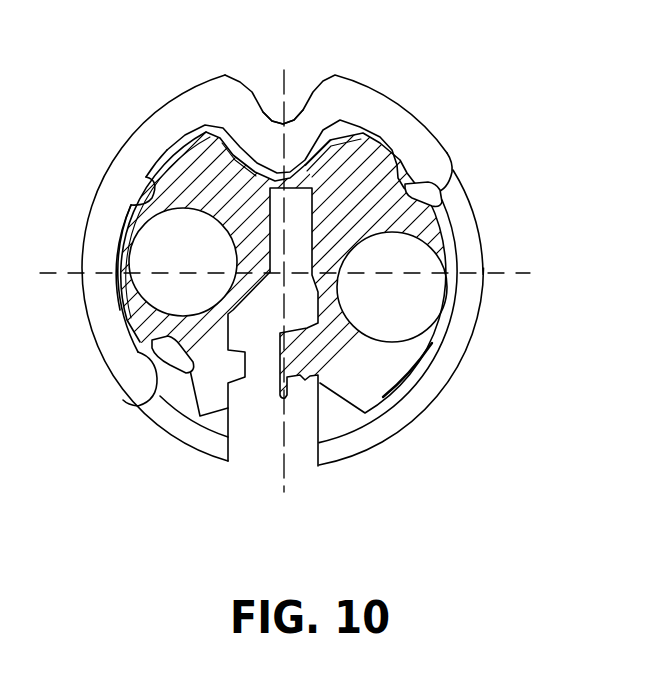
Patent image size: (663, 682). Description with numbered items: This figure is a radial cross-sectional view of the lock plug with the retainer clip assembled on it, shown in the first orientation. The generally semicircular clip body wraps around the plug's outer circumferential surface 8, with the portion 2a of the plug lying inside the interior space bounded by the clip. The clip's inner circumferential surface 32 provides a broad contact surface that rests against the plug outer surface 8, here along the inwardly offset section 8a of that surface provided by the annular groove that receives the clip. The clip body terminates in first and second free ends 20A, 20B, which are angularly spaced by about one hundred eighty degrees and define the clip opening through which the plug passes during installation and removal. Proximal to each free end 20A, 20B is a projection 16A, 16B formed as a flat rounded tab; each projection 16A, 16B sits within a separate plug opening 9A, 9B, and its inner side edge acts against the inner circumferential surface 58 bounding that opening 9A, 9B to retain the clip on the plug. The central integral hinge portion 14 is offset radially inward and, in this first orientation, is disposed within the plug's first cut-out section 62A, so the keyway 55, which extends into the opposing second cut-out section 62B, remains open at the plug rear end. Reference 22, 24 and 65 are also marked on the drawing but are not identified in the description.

The portion of the plug 2a is at (188, 177).
The outer circumferential surface 8 is at (481, 306).
The inwardly offset section 8a is at (183, 142).
The plug opening 9A is at (183, 377).
The plug opening 9B is at (433, 190).
The hinge portion 14 is at (316, 88).
The projection 16A is at (162, 373).
The projection 16B is at (413, 187).
The first free end 20A is at (137, 379).
The second free end 20B is at (433, 160).
The housing wall 22 is at (103, 230).
The housing top 24 is at (395, 118).
The inner circumferential surface 32 is at (150, 173).
The keyway 55 is at (257, 418).
The inner circumferential surface 58 is at (158, 357).
The first cut-out section 62A is at (223, 150).
The second cut-out section 62B is at (347, 402).
The outer surface 65 is at (435, 342).